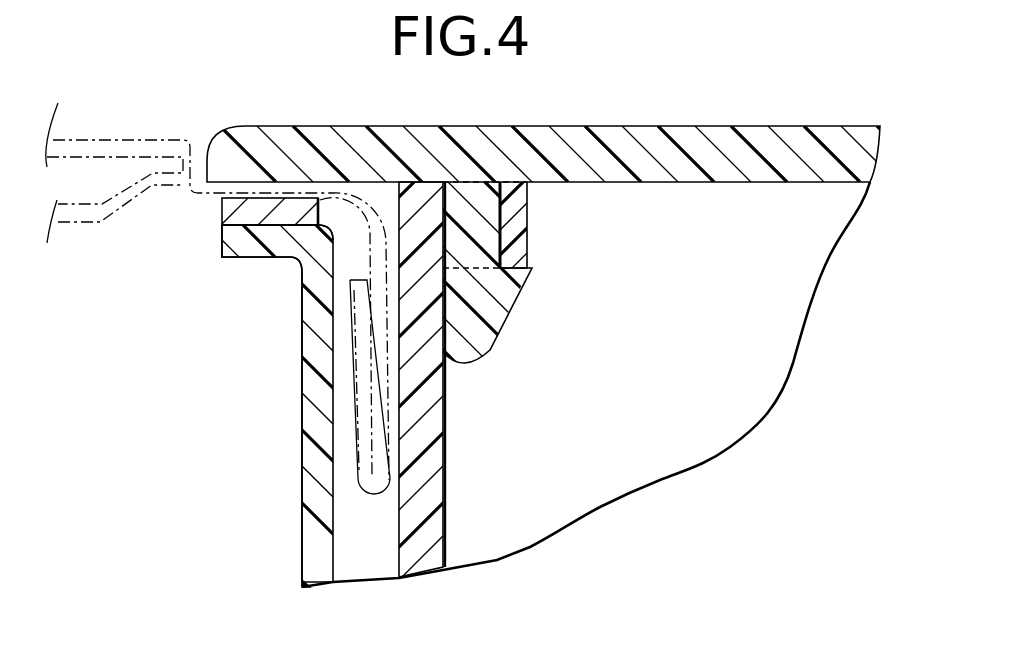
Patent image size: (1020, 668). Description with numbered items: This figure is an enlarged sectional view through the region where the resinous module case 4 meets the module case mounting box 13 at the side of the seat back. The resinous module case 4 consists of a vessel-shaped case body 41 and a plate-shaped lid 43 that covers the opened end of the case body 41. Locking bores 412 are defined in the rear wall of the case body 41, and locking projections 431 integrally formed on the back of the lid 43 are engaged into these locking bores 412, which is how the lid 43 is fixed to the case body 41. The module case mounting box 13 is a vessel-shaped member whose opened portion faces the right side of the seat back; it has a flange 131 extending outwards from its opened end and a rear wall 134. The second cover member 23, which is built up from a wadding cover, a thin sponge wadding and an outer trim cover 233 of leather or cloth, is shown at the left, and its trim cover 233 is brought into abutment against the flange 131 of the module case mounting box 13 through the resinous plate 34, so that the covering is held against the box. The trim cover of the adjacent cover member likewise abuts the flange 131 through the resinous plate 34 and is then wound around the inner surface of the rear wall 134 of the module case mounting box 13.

The resinous module case 4 is at (683, 337).
The lid 43 is at (705, 183).
The case body 41 is at (452, 425).
The locking bores 412 is at (499, 207).
The locking projections 431 is at (490, 311).
The module case mounting box 13 is at (303, 517).
The flange 131 is at (243, 245).
The rear wall 134 is at (307, 408).
The resinous plate 34 is at (232, 208).
The second cover member 23 is at (173, 137).
The trim cover 233 is at (100, 140).